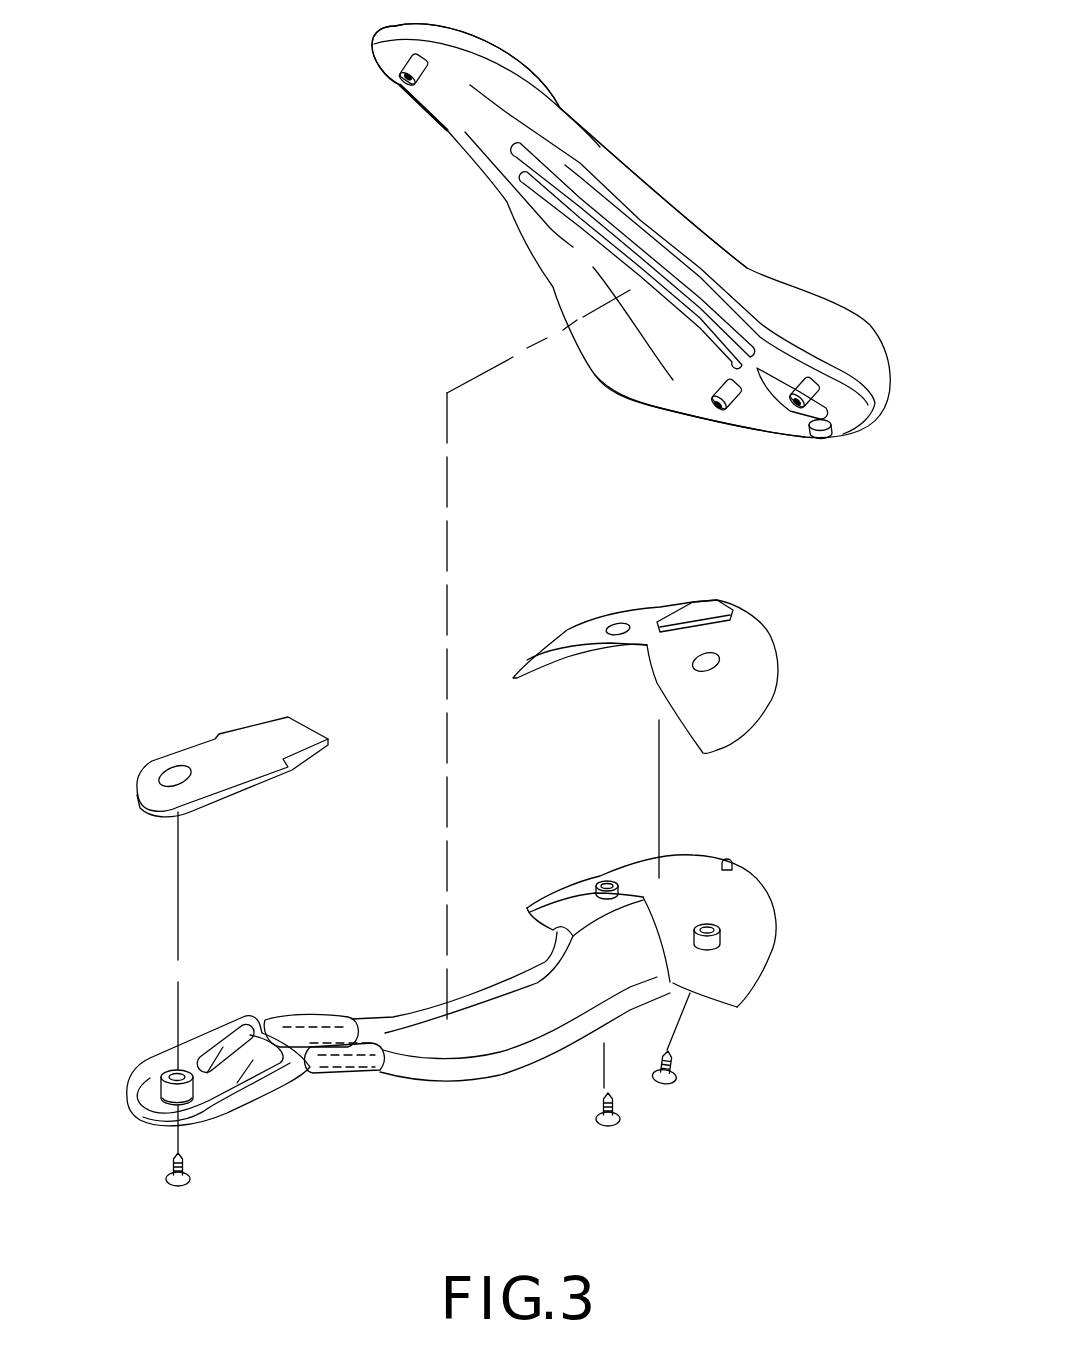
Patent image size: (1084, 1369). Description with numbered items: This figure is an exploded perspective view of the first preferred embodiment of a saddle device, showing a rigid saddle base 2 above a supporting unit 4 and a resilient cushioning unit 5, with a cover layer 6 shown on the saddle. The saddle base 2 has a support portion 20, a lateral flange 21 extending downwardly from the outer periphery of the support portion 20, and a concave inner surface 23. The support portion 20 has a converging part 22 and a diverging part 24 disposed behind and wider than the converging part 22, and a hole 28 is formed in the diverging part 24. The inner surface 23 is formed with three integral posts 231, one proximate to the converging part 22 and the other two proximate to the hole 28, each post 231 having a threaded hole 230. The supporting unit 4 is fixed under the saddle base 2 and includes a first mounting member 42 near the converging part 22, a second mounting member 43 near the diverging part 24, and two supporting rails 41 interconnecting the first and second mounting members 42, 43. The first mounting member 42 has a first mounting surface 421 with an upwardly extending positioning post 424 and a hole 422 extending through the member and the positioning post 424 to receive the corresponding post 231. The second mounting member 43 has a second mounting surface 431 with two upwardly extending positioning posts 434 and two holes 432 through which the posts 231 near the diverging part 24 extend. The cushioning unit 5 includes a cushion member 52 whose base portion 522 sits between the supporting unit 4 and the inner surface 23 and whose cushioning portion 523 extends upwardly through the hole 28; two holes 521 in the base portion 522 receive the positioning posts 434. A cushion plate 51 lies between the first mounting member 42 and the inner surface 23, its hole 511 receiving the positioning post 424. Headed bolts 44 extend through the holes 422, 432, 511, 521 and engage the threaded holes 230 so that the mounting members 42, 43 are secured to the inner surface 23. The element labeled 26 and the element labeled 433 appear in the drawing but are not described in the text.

The saddle base 2 is at (490, 210).
The support portion 20 is at (557, 220).
The lateral flange 21 is at (513, 117).
The converging part 22 is at (405, 58).
The concave inner surface 23 is at (630, 373).
The diverging part 24 is at (818, 394).
The positioning post 26 is at (818, 438).
The hole 28 is at (763, 385).
The threaded hole 230 is at (405, 78).
The post 231 is at (425, 85).
The cover layer 6 is at (657, 188).
The supporting unit 4 is at (528, 1090).
The supporting rail 41 is at (477, 1080).
The first mounting member 42 is at (189, 1048).
The first mounting surface 421 is at (207, 1075).
The hole 422 is at (163, 1078).
The positioning post 424 is at (165, 1093).
The second mounting member 43 is at (688, 915).
The second mounting surface 431 is at (745, 890).
The hole 432 is at (605, 882).
The locating pin 433 is at (732, 862).
The positioning post 434 is at (595, 890).
The headed bolt 44 is at (190, 1178).
The resilient cushioning unit 5 is at (347, 783).
The cushion plate 51 is at (249, 745).
The hole 511 is at (168, 772).
The cushion member 52 is at (645, 705).
The hole 521 is at (703, 667).
The base portion 522 is at (750, 677).
The cushioning portion 523 is at (717, 603).